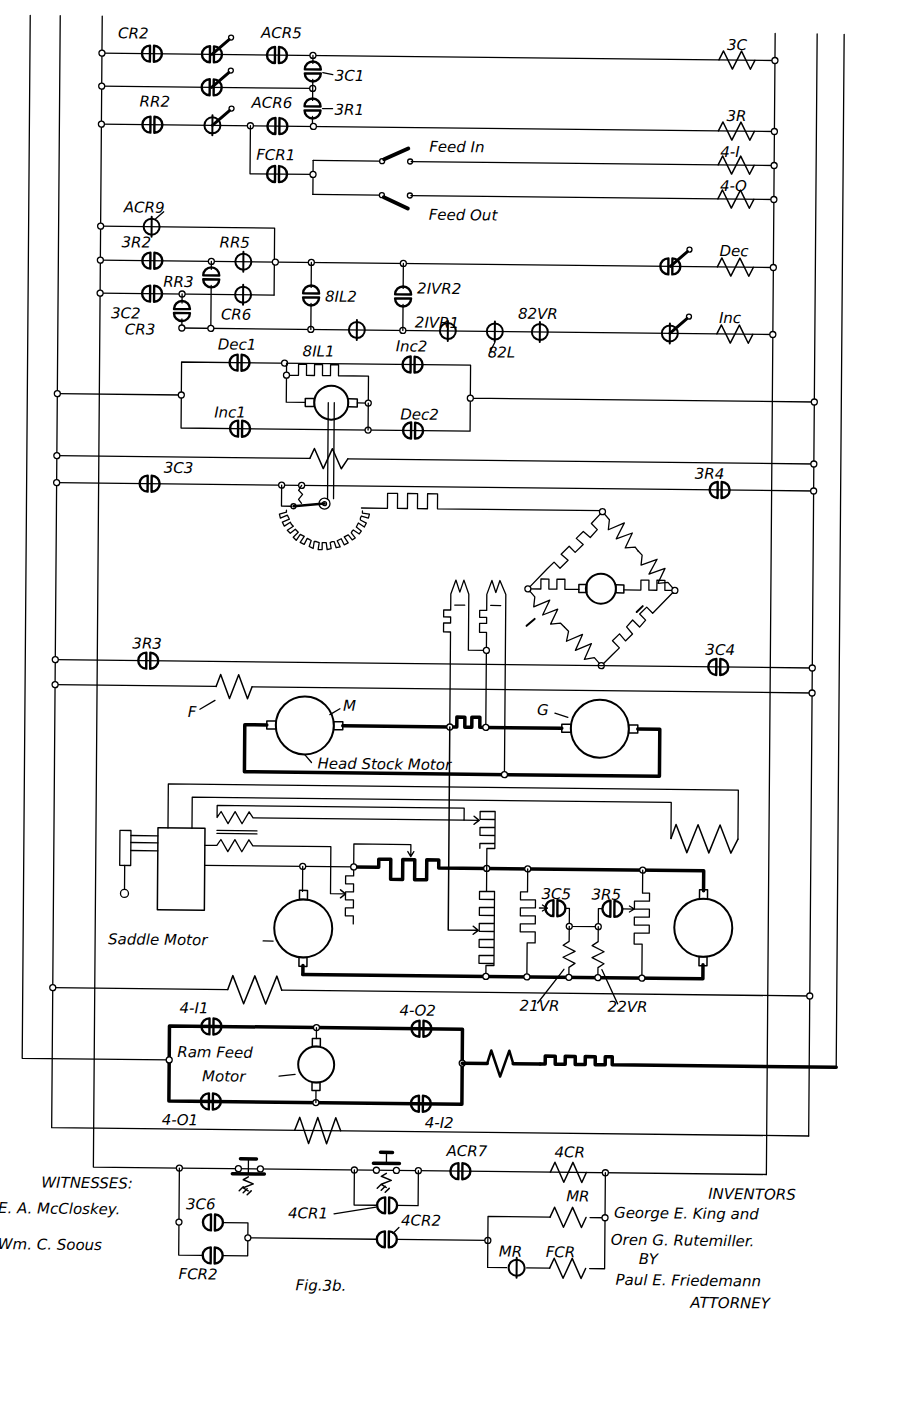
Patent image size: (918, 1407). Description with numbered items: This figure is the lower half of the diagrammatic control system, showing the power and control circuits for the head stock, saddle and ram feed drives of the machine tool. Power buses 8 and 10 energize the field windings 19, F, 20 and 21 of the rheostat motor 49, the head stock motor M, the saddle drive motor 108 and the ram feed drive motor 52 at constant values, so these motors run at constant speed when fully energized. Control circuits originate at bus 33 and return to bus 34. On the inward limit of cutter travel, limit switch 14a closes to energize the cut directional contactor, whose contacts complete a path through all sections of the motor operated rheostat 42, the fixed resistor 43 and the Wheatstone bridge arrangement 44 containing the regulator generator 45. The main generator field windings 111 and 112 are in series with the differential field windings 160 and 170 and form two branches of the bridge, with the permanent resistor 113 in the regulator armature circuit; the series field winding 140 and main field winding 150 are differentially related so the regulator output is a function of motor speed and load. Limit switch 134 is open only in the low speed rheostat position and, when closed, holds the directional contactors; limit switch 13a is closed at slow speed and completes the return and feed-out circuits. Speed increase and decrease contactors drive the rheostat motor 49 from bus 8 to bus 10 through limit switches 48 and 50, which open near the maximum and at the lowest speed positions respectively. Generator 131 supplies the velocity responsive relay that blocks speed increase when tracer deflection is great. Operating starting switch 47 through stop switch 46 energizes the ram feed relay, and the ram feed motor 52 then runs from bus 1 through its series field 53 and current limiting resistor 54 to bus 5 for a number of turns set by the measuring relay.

The bus 1 is at (26, 63).
The bus 8 is at (58, 63).
The bus 5 is at (842, 64).
The bus 10 is at (813, 64).
The control bus 33 is at (99, 546).
The control bus 34 is at (770, 546).
The limit switch 14a is at (213, 42).
The limit switch 134 is at (232, 76).
The limit switch 13a is at (205, 136).
The limit switch 50 is at (667, 252).
The limit switch 48 is at (667, 320).
The rheostat motor 49 is at (327, 431).
The field winding 19 is at (343, 458).
The motor operated rheostat 42 is at (324, 517).
The fixed resistor 43 is at (412, 522).
The Wheatstone bridge arrangement 44 is at (619, 587).
The regulator generator 45 is at (605, 574).
The main generator field winding 111 is at (625, 533).
The permanent resistor 113 is at (565, 550).
The differential field winding 160 is at (668, 573).
The differential field winding 170 is at (560, 616).
The main generator field winding 112 is at (590, 652).
The series field winding 140 is at (453, 590).
The main field winding 150 is at (493, 582).
The saddle drive motor 108 is at (332, 948).
The generator 131 is at (715, 952).
The field winding 20 is at (284, 1000).
The field winding 21 is at (298, 1132).
The ram feed drive motor 52 is at (339, 1067).
The series field 53 is at (498, 1054).
The current limiting resistor 54 is at (576, 1055).
The stop switch 46 is at (262, 1170).
The starting switch 47 is at (397, 1160).